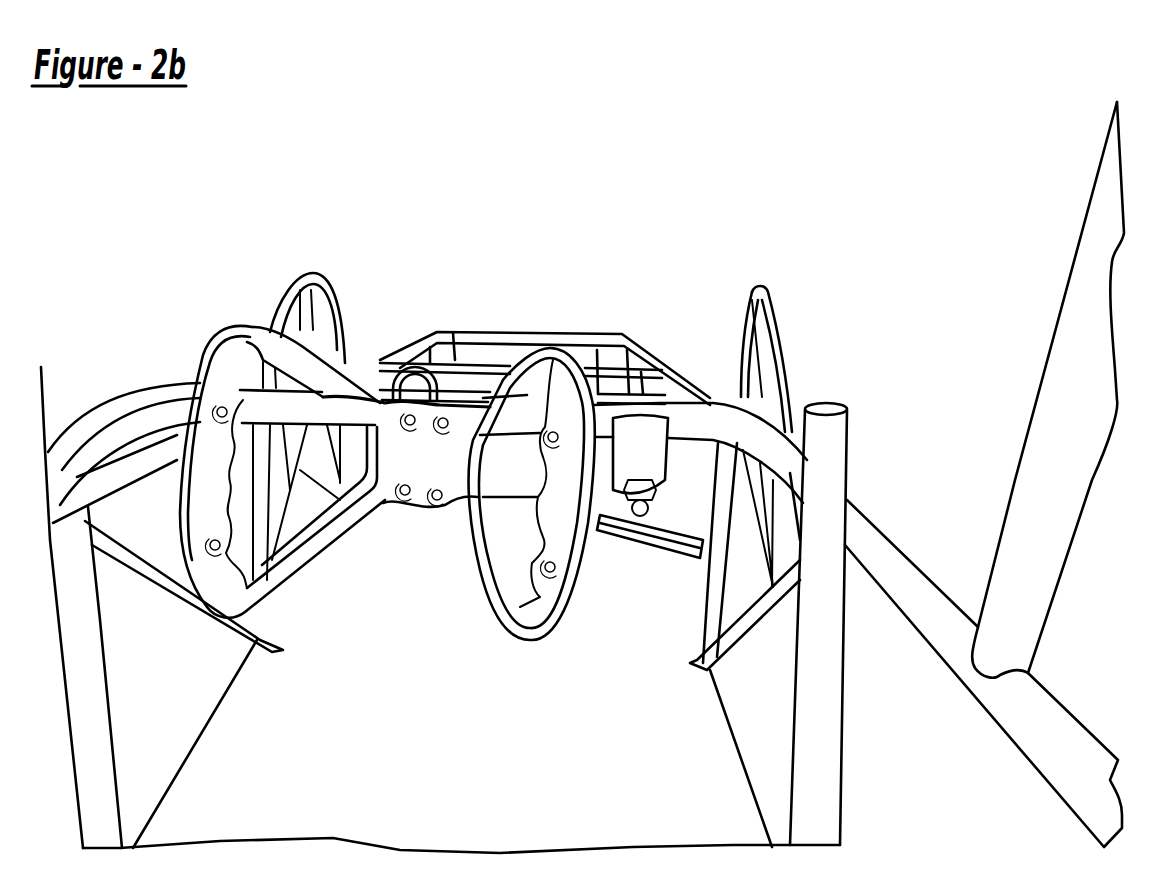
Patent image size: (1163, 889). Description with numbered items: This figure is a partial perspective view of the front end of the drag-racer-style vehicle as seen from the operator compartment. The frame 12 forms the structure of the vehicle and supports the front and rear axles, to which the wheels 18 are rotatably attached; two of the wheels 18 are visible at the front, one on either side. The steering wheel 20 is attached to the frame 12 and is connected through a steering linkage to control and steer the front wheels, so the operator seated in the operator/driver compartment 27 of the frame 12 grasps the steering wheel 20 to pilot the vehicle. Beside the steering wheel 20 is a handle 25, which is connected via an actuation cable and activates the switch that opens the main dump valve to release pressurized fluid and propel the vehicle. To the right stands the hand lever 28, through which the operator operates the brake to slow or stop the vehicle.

The frame 12 is at (483, 330).
The wheels 18 is at (322, 290).
The steering wheel 20 is at (262, 340).
The handle 25 is at (647, 540).
The operator/driver compartment 27 is at (398, 653).
The hand lever 28 is at (853, 481).